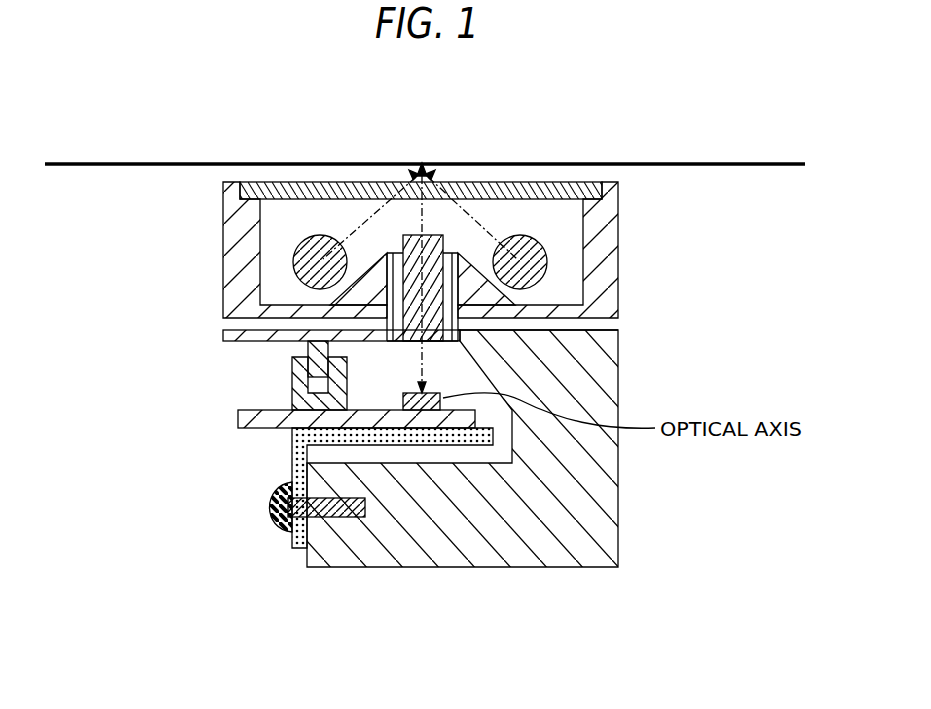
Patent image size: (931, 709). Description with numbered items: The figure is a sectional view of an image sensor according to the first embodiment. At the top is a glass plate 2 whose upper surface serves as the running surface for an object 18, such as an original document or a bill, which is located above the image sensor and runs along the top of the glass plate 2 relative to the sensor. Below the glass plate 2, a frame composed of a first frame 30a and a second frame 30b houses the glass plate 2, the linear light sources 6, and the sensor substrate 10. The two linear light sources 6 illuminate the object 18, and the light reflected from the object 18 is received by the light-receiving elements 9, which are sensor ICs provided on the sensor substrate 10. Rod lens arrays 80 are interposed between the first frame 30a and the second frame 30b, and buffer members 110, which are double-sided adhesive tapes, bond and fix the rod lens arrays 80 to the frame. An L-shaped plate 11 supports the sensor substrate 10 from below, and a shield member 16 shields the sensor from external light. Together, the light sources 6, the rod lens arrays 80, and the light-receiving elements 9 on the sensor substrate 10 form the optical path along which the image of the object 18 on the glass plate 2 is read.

The glass plate 2 is at (477, 191).
The object 18 is at (616, 163).
The first frame 30a is at (612, 213).
The second frame 30b is at (233, 248).
The linear light sources 6 is at (547, 258).
The buffer members 110 is at (388, 297).
The shield member 16 is at (292, 372).
The sensor substrate 10 is at (240, 420).
The L-shaped plate 11 is at (290, 470).
The rod lens arrays 80 is at (433, 360).
The light-receiving elements 9 is at (570, 452).